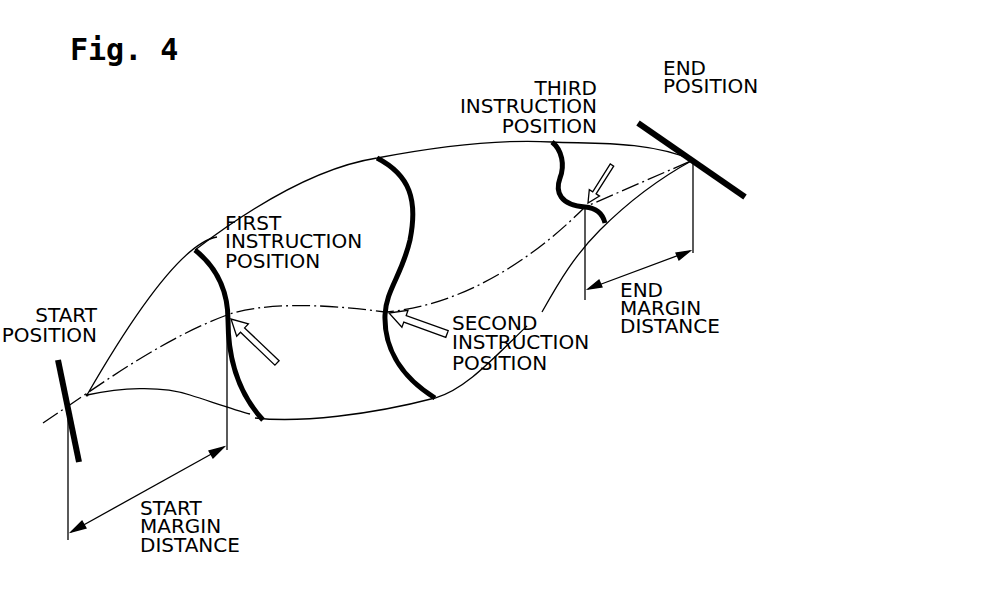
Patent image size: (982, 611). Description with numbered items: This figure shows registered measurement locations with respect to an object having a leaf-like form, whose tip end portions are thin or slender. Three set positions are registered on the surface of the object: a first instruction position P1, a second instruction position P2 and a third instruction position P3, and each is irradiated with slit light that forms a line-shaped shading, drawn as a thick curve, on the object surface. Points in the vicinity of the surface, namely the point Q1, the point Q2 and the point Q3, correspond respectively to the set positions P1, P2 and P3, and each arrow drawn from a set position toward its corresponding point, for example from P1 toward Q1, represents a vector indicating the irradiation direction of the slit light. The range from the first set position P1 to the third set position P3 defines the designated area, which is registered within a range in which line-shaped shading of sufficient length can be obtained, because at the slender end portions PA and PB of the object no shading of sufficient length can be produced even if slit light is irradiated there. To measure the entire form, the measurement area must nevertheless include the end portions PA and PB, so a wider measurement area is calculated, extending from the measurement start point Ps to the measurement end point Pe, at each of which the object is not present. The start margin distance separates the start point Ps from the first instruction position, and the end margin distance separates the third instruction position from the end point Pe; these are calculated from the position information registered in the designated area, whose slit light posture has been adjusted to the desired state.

The measurement start point Ps is at (103, 441).
The end portion of the object PA is at (88, 397).
The point in the vicinity of the object surface Q1 is at (226, 314).
The set position P1 is at (278, 364).
The point in the vicinity of the object surface Q2 is at (384, 311).
The set position P2 is at (447, 336).
The point in the vicinity of the object surface Q3 is at (584, 207).
The set position P3 is at (613, 164).
The measurement end point Pe is at (732, 105).
The end portion of the object PB is at (694, 162).